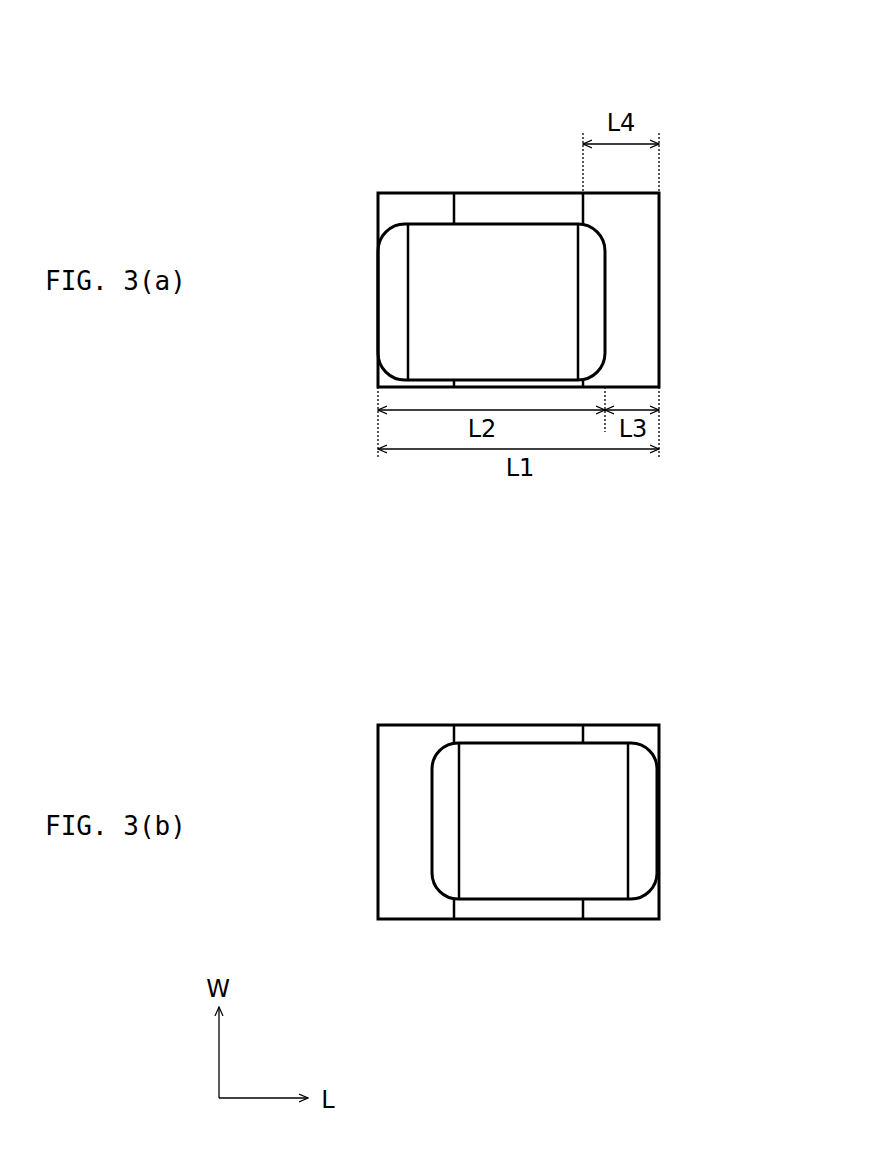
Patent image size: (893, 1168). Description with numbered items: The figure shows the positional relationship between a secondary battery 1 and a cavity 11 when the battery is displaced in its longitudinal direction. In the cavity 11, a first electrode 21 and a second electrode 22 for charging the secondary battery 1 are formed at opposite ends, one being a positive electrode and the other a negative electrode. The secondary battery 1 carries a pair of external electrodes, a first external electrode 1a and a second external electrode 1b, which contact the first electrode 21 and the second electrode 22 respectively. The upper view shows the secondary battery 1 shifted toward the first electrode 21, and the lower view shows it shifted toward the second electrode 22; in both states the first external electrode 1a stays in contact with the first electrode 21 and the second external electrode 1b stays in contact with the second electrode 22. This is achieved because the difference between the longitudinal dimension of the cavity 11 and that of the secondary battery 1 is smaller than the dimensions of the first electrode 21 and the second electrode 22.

In FIG. 3A, the secondary battery 1 is at (484, 218).
In FIG. 3B, the secondary battery 1 is at (522, 740).
In FIG. 3A, the first external electrode 1a is at (392, 255).
In FIG. 3B, the first external electrode 1a is at (440, 792).
In FIG. 3A, the second external electrode 1b is at (597, 266).
In FIG. 3B, the second external electrode 1b is at (648, 799).
In FIG. 3A, the cavity 11 is at (522, 193).
In FIG. 3B, the cavity 11 is at (563, 725).
In FIG. 3A, the first electrode 21 is at (427, 203).
In FIG. 3B, the first electrode 21 is at (407, 742).
In FIG. 3A, the second electrode 22 is at (627, 225).
In FIG. 3B, the second electrode 22 is at (618, 738).